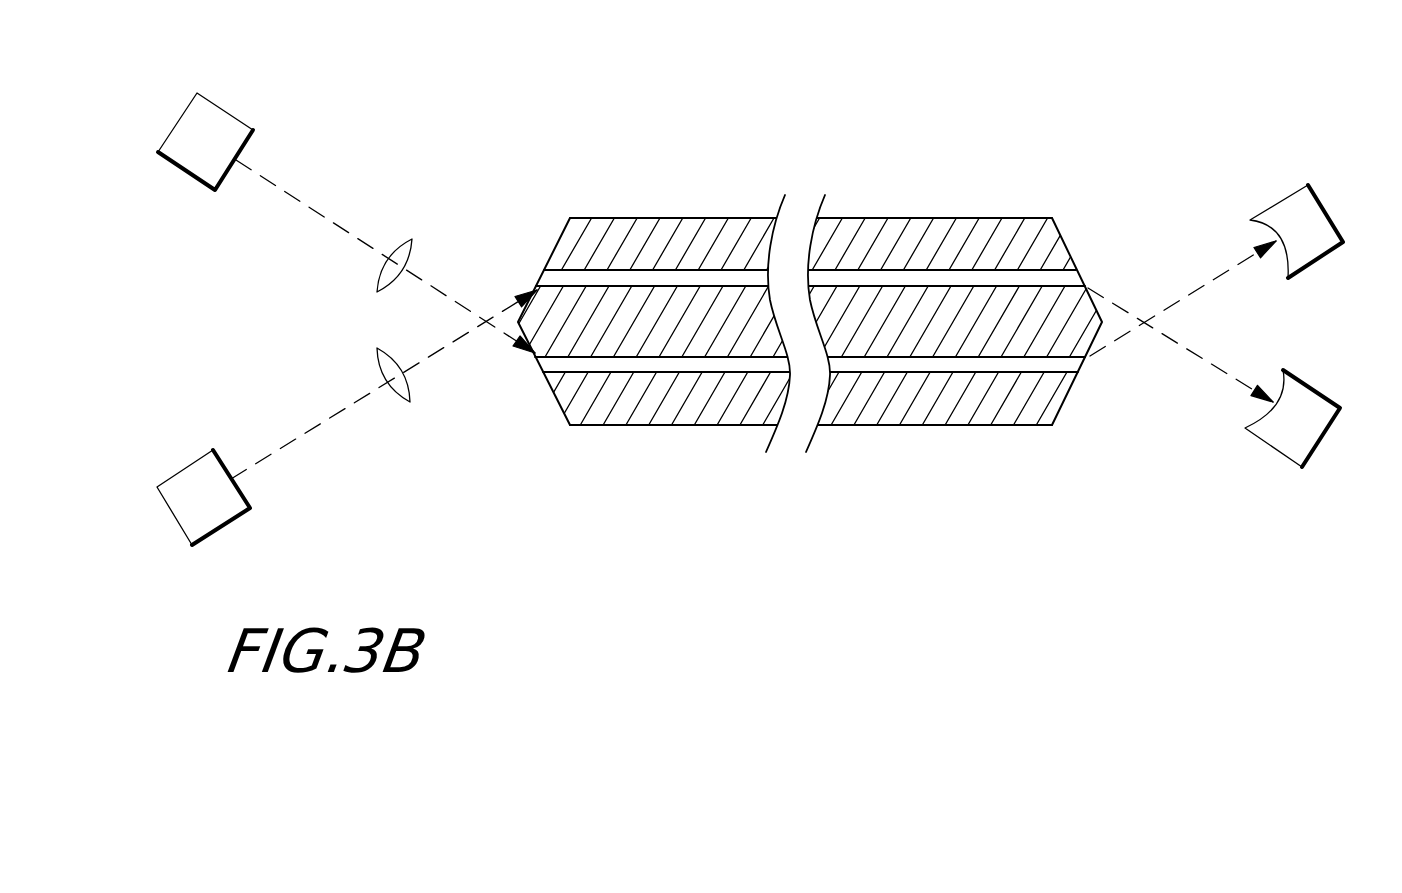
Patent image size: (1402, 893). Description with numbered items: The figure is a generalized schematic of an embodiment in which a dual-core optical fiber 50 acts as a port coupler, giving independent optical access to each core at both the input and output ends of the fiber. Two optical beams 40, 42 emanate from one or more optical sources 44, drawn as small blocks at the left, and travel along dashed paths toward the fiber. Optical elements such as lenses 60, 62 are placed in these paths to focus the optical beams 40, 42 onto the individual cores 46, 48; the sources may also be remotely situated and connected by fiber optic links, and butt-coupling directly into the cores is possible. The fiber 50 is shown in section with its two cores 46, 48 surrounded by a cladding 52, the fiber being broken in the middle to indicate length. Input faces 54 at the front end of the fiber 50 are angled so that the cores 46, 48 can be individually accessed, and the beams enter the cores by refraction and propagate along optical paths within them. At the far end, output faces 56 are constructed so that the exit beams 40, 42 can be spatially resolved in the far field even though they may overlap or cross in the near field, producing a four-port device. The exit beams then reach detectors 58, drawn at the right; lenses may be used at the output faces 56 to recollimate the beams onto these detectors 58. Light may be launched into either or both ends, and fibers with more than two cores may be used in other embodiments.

The optical beam 40 is at (275, 183).
The optical beam 42 is at (318, 424).
The optical source 44 is at (184, 112).
The core 46 is at (910, 372).
The core 48 is at (904, 283).
The optical fiber 50 is at (806, 319).
The cladding 52 is at (661, 405).
The input face 54 is at (553, 248).
The output face 56 is at (1068, 240).
The detector 58 is at (1328, 208).
The lens 60 is at (380, 270).
The lens 62 is at (390, 399).